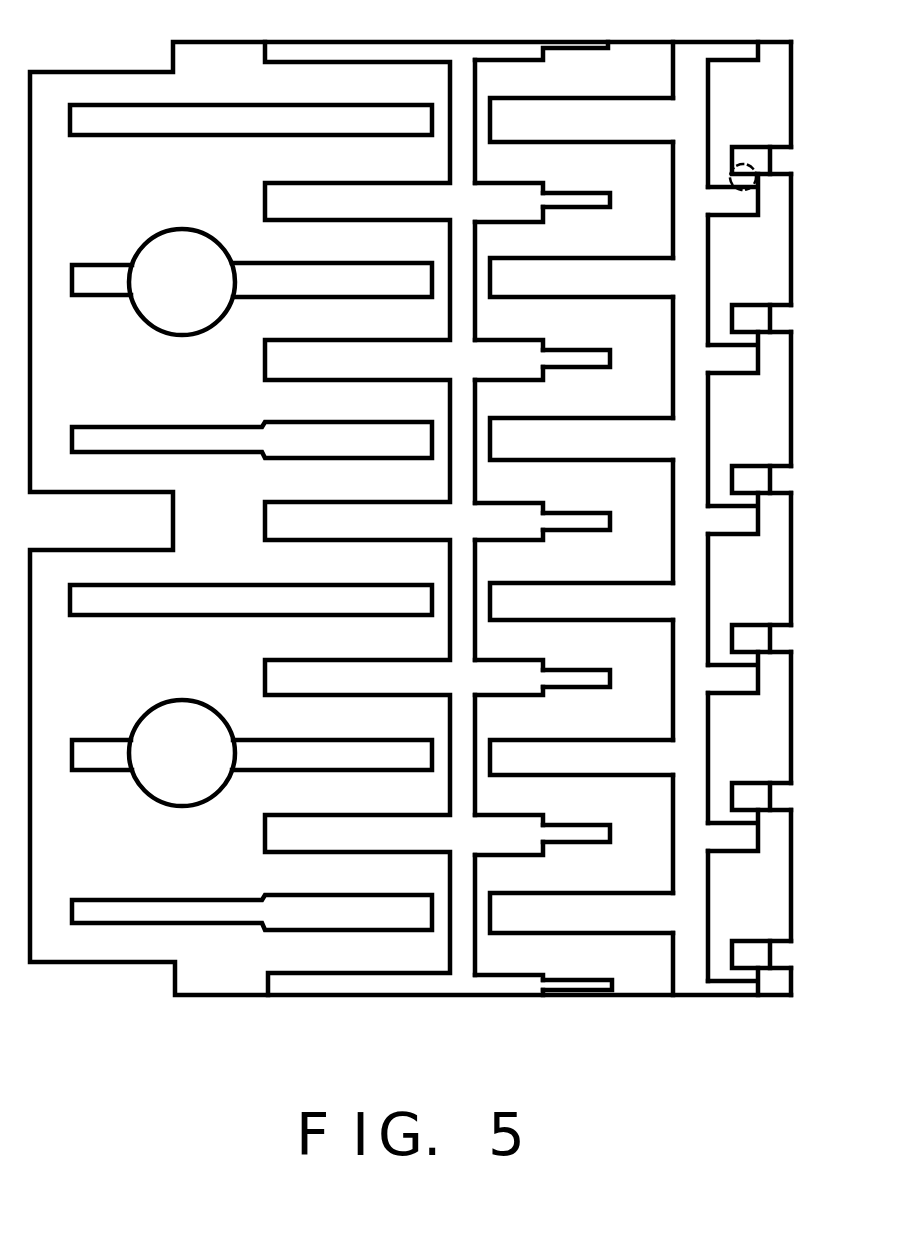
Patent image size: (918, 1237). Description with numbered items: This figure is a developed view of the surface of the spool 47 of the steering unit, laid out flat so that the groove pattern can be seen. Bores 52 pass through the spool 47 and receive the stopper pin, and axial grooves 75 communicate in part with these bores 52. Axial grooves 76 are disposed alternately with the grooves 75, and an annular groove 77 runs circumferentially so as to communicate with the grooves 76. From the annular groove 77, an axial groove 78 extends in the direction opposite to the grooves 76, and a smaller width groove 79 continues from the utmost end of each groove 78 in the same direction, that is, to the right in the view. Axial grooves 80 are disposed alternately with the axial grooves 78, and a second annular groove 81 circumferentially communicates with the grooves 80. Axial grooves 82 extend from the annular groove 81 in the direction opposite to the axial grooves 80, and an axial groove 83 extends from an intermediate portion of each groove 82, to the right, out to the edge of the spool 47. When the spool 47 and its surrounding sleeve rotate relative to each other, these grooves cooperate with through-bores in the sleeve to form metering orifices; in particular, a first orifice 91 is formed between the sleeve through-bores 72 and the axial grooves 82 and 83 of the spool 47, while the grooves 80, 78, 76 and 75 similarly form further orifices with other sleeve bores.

The spool 47 is at (110, 92).
The bores 52 is at (186, 263).
The through-bores 72 is at (746, 191).
The axial grooves 75 is at (348, 448).
The axial grooves 76 is at (337, 365).
The annular groove 77 is at (460, 90).
The axial groove 78 is at (505, 368).
The smaller width groove 79 is at (577, 357).
The axial grooves 80 is at (567, 122).
The annular groove 81 is at (690, 92).
The axial grooves 82 is at (733, 362).
The axial groove 83 is at (758, 318).
The first orifice 91 is at (768, 164).